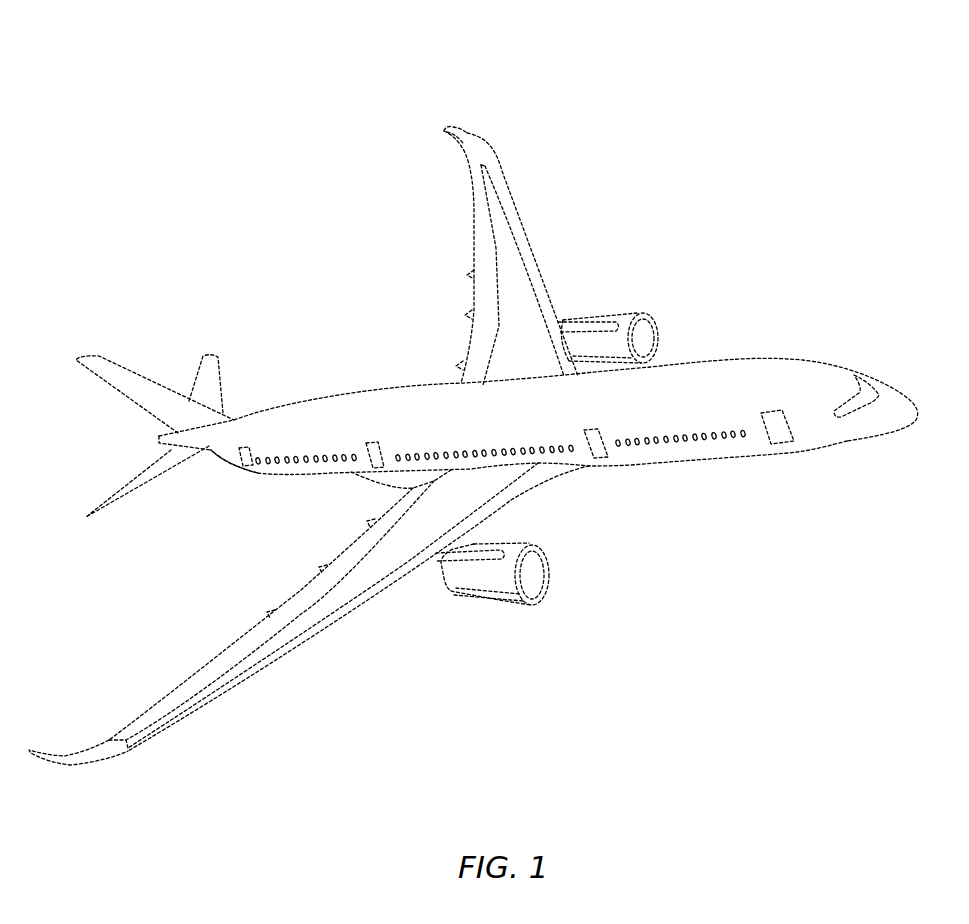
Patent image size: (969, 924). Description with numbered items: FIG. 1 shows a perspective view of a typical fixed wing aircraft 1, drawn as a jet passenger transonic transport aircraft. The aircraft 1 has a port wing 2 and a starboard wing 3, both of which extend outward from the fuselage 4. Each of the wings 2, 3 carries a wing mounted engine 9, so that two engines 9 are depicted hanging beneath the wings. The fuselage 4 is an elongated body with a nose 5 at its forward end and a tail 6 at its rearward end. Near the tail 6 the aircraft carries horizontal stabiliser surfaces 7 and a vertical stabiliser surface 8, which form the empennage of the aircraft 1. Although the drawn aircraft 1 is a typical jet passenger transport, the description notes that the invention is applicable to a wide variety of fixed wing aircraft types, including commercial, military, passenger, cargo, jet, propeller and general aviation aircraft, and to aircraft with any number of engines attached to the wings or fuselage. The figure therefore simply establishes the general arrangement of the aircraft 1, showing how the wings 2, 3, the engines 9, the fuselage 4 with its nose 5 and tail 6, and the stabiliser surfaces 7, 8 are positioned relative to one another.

The aircraft 1 is at (665, 163).
The port wing 2 is at (505, 258).
The starboard wing 3 is at (377, 562).
The fuselage 4 is at (642, 423).
The nose 5 is at (807, 433).
The tail 6 is at (227, 447).
The horizontal stabiliser surfaces 7 is at (208, 370).
The vertical stabiliser surface 8 is at (116, 375).
The wing mounted engines 9 is at (618, 313).